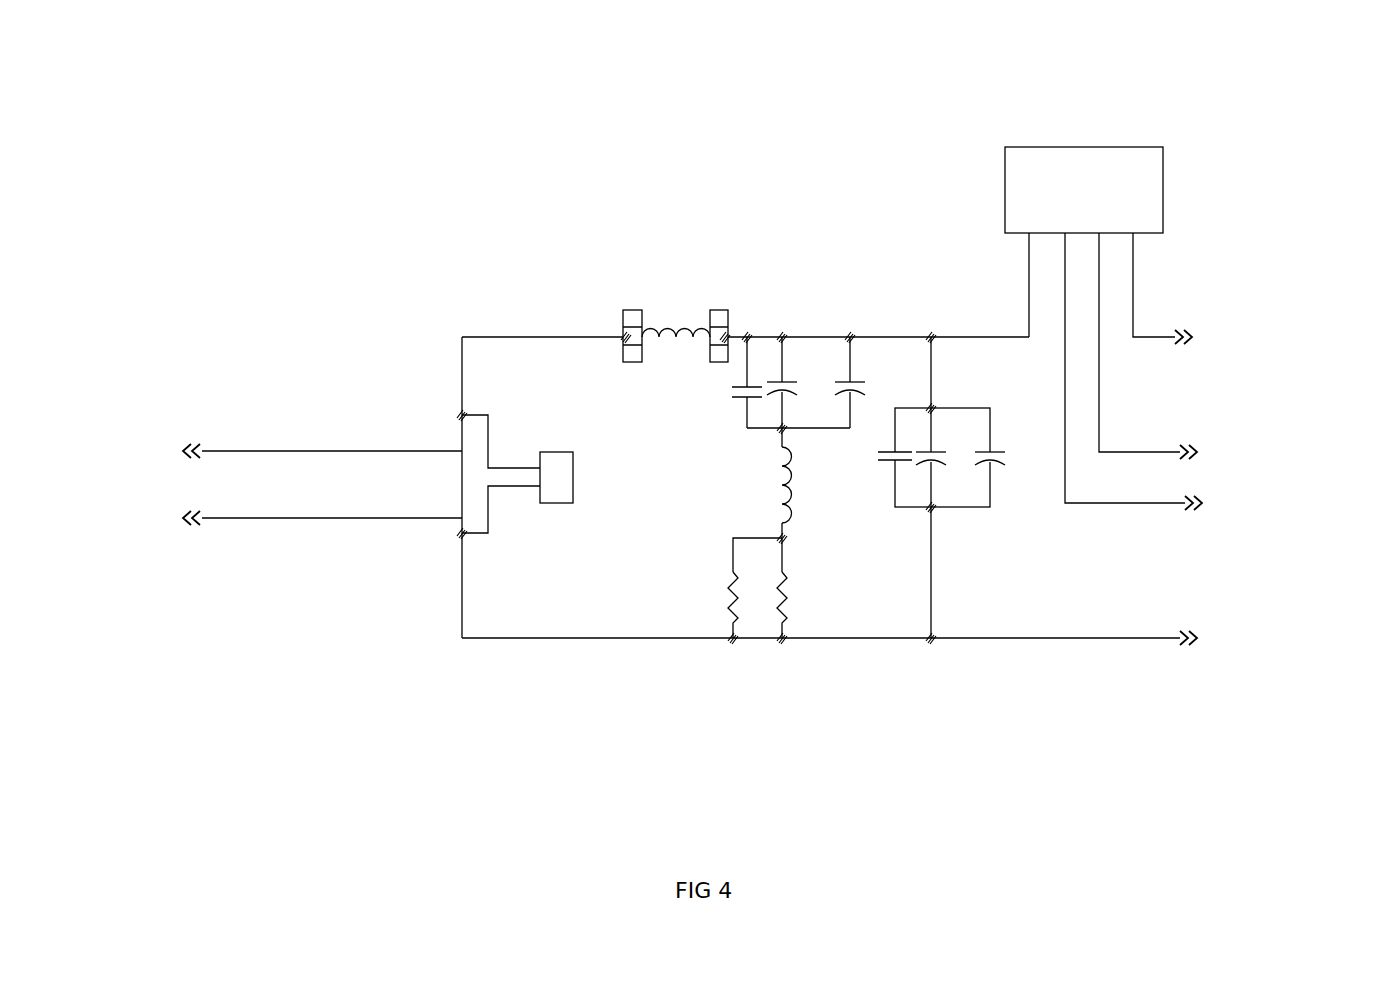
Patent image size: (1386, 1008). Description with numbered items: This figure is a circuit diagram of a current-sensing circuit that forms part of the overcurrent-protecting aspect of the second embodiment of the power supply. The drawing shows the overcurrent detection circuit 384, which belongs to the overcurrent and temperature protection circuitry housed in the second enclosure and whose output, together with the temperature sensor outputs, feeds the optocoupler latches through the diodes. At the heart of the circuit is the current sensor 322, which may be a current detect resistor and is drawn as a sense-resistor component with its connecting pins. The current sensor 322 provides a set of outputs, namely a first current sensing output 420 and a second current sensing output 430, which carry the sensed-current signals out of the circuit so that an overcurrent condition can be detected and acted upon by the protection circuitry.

The overcurrent detection circuit 384 is at (872, 178).
The current sensor 322 is at (1147, 170).
The first current sensing output 420 is at (1223, 437).
The second current sensing output 430 is at (1243, 502).